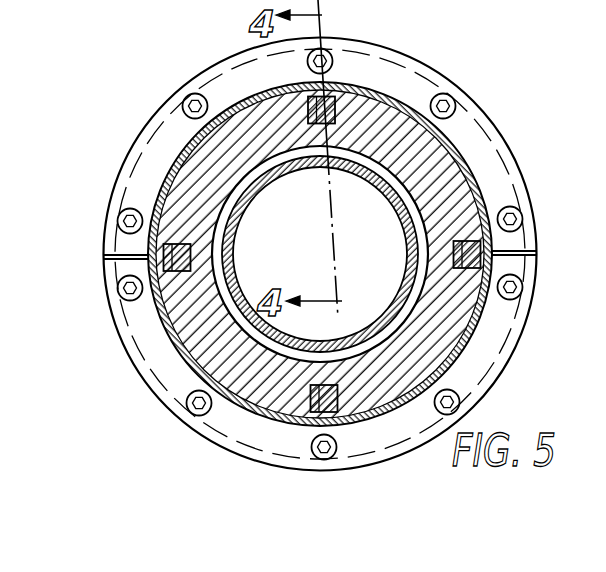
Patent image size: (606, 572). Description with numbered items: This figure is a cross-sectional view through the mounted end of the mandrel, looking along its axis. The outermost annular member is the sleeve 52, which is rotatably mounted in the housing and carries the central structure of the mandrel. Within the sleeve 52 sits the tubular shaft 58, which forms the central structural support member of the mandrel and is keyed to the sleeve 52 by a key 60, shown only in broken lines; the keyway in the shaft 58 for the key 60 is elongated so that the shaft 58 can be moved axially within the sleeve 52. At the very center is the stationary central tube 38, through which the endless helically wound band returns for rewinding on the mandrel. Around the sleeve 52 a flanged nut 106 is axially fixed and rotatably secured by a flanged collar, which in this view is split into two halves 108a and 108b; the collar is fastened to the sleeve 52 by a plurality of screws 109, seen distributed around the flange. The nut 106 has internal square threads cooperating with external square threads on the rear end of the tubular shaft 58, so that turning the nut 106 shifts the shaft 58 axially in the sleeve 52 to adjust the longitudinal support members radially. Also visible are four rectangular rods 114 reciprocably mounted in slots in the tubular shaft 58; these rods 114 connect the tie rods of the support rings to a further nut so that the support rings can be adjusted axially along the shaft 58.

The sleeve 52 is at (412, 66).
The key 60 is at (468, 164).
The flanged nut 106 is at (180, 158).
The collar half 108a is at (104, 243).
The collar half 108b is at (112, 294).
The screws 109 is at (182, 108).
The rectangular rods 114 is at (309, 98).
The tubular shaft 58 is at (244, 180).
The stationary central tube 38 is at (237, 217).